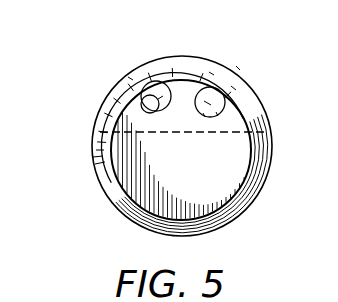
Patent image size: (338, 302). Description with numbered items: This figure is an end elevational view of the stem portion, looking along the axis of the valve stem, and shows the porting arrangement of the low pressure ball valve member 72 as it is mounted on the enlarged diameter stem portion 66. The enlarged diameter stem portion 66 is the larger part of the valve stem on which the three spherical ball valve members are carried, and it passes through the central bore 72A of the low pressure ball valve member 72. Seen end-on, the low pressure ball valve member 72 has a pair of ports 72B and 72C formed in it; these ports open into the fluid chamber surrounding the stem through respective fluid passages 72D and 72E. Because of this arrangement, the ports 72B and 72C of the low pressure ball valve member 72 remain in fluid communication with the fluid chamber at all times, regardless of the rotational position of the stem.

The low pressure ball valve member 72 is at (255, 120).
The central bore 72A is at (100, 150).
The port 72B is at (238, 64).
The port 72C is at (135, 66).
The fluid passage 72D is at (201, 118).
The fluid passage 72E is at (146, 105).
The enlarged diameter stem portion 66 is at (145, 190).